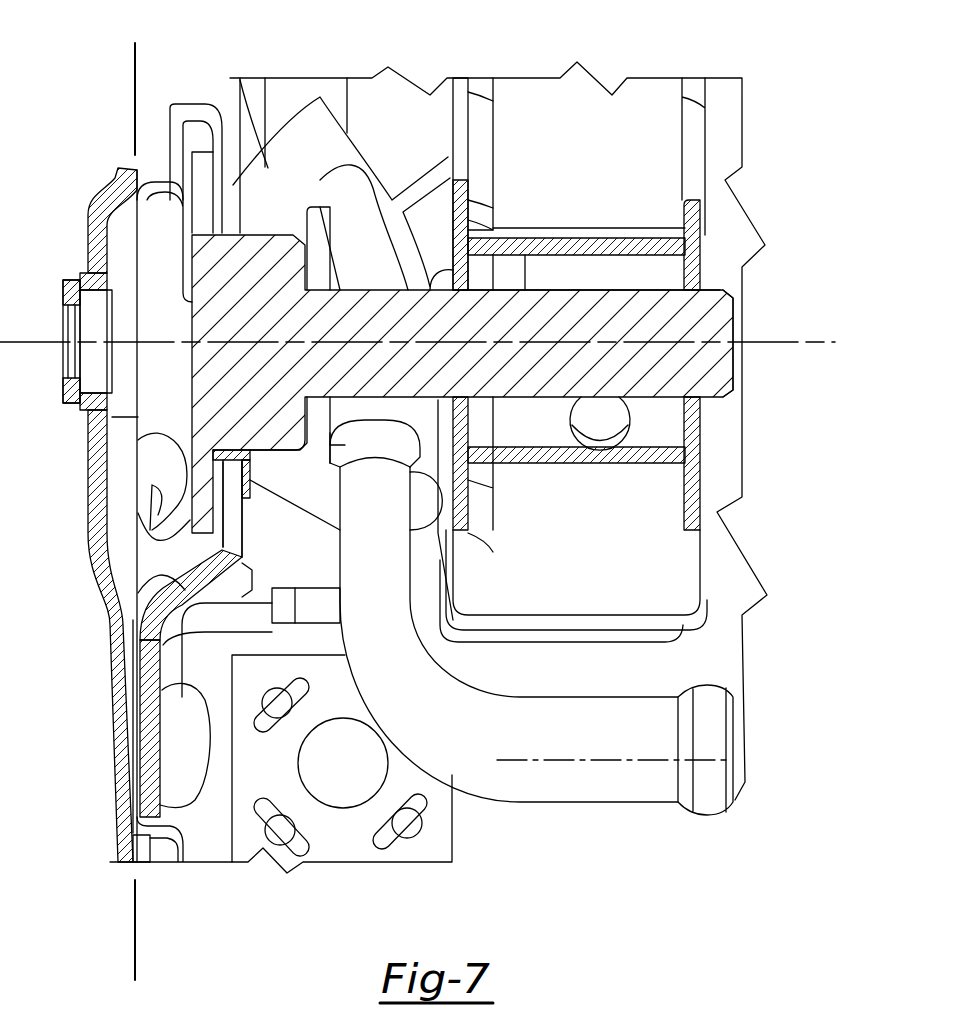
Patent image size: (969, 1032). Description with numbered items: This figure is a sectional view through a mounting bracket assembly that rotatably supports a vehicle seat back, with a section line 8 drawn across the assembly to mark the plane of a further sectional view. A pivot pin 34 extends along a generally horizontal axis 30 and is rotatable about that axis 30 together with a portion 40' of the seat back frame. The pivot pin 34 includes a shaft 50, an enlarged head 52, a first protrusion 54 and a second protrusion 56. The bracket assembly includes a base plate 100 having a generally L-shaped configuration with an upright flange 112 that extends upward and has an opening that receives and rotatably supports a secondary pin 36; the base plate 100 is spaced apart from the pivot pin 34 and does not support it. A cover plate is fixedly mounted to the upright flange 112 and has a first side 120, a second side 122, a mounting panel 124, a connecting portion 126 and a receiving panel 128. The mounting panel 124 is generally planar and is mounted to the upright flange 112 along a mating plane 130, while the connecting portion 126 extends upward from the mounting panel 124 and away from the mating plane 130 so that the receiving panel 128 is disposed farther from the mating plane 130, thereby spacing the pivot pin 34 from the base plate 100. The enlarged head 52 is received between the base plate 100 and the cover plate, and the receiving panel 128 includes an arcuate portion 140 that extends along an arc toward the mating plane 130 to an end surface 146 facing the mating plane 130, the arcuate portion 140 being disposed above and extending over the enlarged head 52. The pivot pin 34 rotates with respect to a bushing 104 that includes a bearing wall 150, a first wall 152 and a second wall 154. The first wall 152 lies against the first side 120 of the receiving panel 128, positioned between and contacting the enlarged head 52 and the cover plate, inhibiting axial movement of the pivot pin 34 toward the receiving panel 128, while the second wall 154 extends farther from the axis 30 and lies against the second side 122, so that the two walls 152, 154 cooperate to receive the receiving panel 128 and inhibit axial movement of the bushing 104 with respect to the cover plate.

The section line 8- 8 is at (135, 65).
The axis 30 is at (793, 343).
The pivot pin 34 is at (733, 312).
The secondary pin 36 is at (72, 283).
The portion of the seat back frame 40' is at (498, 408).
The shaft 50 is at (589, 329).
The enlarged head 52 is at (137, 558).
The first protrusion 54 is at (277, 232).
The second protrusion 56 is at (268, 452).
The base plate 100 is at (107, 196).
The bushing 104 is at (238, 447).
The upright flange 112 is at (88, 480).
The first side 120 is at (112, 680).
The second side 122 is at (157, 685).
The mounting panel 124 is at (150, 673).
The connecting portion 126 is at (187, 590).
The receiving panel 128 is at (233, 185).
The mating plane 130 is at (138, 417).
The arcuate portion 140 is at (193, 103).
The end surface 146 is at (160, 112).
The bearing wall 150 is at (238, 447).
The first wall 152 is at (210, 458).
The second wall 154 is at (254, 492).